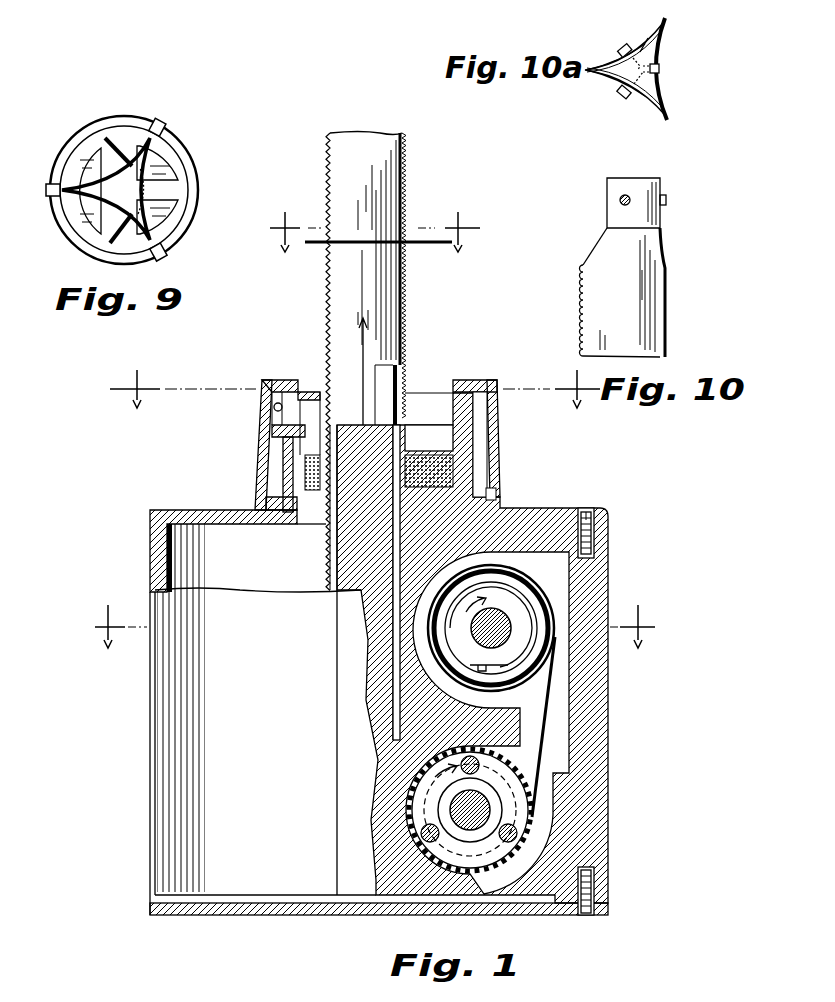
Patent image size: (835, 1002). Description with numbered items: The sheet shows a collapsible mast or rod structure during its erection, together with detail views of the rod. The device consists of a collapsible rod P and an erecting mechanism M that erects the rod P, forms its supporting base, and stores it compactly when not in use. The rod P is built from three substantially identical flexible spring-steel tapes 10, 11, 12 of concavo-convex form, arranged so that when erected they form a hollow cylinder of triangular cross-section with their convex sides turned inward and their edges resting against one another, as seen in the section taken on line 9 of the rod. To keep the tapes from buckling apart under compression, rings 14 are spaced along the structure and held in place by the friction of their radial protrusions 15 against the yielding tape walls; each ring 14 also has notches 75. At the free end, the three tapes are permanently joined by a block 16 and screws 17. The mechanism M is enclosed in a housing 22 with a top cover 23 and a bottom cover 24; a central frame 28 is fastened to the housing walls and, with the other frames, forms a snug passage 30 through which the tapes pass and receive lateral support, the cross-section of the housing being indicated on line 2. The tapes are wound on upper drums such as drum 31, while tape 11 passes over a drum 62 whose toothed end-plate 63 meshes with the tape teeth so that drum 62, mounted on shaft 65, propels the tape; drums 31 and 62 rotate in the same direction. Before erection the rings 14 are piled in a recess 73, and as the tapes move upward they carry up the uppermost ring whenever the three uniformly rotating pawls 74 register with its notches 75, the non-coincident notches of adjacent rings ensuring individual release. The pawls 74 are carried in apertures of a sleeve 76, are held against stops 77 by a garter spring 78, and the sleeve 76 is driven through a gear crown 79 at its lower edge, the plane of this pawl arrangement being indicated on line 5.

In FIG. 9, the collapsible rod P is at (90, 207).
In FIG. 10a, the collapsible rod P is at (625, 69).
In FIG. 10, the collapsible rod P is at (648, 306).
In FIG. 1, the collapsible rod P is at (386, 144).
In FIG. 9, the flexible metal tape 10 is at (118, 220).
In FIG. 10a, the flexible metal tape 10 is at (618, 82).
In FIG. 9, the flexible metal tape 11 is at (144, 205).
In FIG. 10a, the flexible metal tape 11 is at (660, 92).
In FIG. 1, the flexible metal tape 11 is at (540, 748).
In FIG. 9, the flexible metal tape 12 is at (128, 165).
In FIG. 10a, the flexible metal tape 12 is at (620, 60).
In FIG. 9, the ring 14 is at (185, 168).
In FIG. 1, the ring 14 is at (424, 240).
In FIG. 9, the radial protrusion 15 is at (108, 160).
In FIG. 10a, the block 16 is at (645, 38).
In FIG. 10a, the screw 17 is at (660, 68).
In FIG. 10, the screw 17 is at (620, 201).
In FIG. 1, the housing 22 is at (608, 744).
In FIG. 1, the top cover 23 is at (540, 510).
In FIG. 1, the bottom cover 24 is at (408, 917).
In FIG. 1, the central frame 28 is at (472, 648).
In FIG. 1, the passage 30 is at (400, 548).
In FIG. 1, the upper drum 31 is at (510, 608).
In FIG. 1, the drum 62 is at (518, 870).
In FIG. 1, the toothed end-plate 63 is at (465, 868).
In FIG. 1, the shaft 65 is at (478, 830).
In FIG. 1, the recess 73 is at (426, 447).
In FIG. 1, the pawl 74 is at (300, 395).
In FIG. 9, the notch 75 is at (162, 133).
In FIG. 1, the sleeve 76 is at (500, 395).
In FIG. 1, the stop 77 is at (276, 384).
In FIG. 1, the garter spring 78 is at (274, 407).
In FIG. 1, the gear crown 79 is at (498, 494).
In FIG. 1, the erecting mechanism M is at (596, 536).
In FIG. 1, the section line 2- 2 is at (375, 644).
In FIG. 1, the section line 5- 5 is at (355, 409).
In FIG. 1, the section line 9- 9 is at (375, 245).